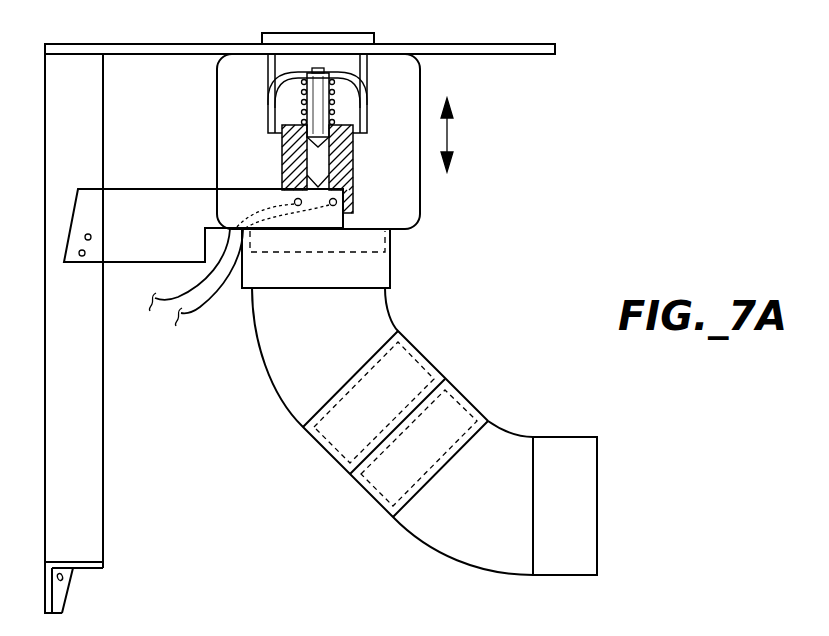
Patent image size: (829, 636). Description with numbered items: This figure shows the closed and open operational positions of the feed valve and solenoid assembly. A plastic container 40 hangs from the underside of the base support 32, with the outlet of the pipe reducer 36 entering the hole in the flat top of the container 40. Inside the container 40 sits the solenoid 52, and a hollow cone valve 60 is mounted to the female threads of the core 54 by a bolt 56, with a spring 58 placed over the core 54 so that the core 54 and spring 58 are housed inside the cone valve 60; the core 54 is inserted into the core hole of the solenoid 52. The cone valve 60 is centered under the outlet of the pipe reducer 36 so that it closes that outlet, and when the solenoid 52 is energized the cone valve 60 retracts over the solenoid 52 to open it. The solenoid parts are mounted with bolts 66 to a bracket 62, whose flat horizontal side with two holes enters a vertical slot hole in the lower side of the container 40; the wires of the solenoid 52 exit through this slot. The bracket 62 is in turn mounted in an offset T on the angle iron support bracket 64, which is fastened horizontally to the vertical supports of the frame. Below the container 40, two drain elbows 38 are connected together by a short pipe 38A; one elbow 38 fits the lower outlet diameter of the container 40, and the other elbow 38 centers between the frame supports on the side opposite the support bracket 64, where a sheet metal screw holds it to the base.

The base support 32 is at (181, 43).
The pipe reducer 36 is at (275, 32).
The drain elbow 38 is at (420, 537).
The short pipe 38A is at (423, 376).
The container 40 is at (225, 108).
The solenoid 52 is at (408, 161).
The core 54 is at (317, 93).
The bolt 56 is at (425, 174).
The spring 58 is at (318, 127).
The cone valve 60 is at (355, 203).
The bracket 62 is at (188, 252).
The support bracket 64 is at (88, 487).
The bolts 66 is at (331, 199).